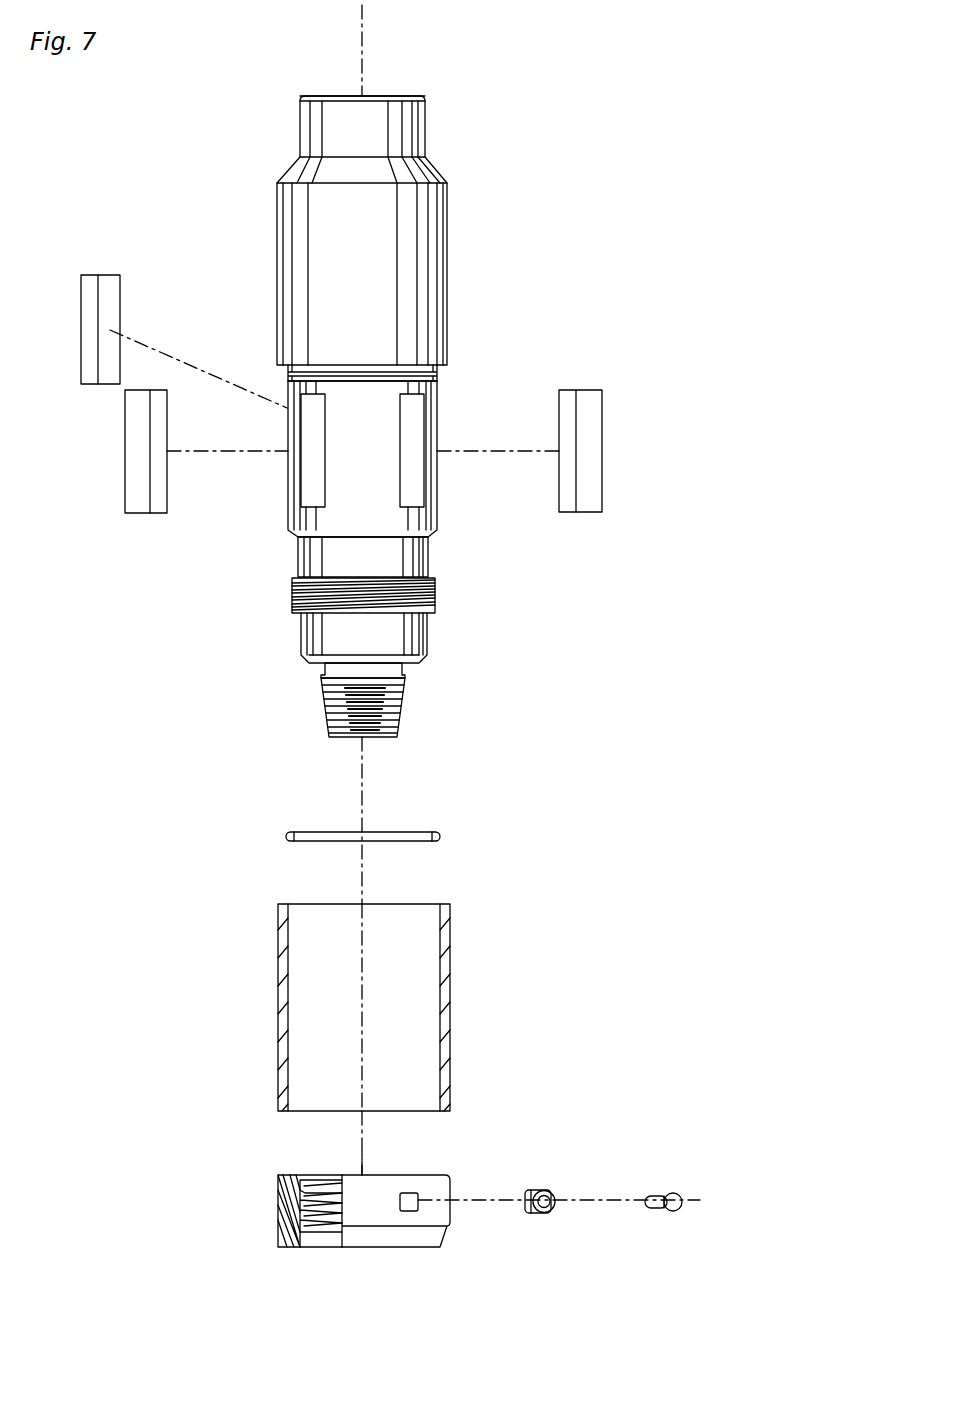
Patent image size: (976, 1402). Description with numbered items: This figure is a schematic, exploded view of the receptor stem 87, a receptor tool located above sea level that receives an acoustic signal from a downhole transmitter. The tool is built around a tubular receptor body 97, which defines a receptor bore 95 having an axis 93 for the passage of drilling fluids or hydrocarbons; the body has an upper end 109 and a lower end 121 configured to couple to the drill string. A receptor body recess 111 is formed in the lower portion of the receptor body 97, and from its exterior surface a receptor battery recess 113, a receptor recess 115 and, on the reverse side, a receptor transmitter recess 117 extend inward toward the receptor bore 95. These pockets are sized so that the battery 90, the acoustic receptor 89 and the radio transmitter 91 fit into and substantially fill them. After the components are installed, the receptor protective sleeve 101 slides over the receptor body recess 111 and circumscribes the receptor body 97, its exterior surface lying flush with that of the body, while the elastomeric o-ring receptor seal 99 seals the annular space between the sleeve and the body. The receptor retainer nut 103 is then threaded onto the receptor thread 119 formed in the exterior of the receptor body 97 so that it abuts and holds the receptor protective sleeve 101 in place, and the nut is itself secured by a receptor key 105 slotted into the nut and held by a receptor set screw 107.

The receptor stem 87 is at (531, 313).
The acoustic receptor 89 is at (135, 423).
The battery 90 is at (594, 427).
The radio transmitter 91 is at (84, 315).
The axis 93 is at (362, 32).
The receptor bore 95 is at (323, 80).
The receptor body 97 is at (450, 237).
The receptor seal 99 is at (440, 836).
The receptor protective sleeve 101 is at (450, 990).
The receptor retainer nut 103 is at (413, 1175).
The receptor key 105 is at (542, 1190).
The receptor set screw 107 is at (682, 1202).
The upper end 109 is at (432, 128).
The receptor body recess 111 is at (437, 487).
The receptor battery recess 113 is at (412, 425).
The receptor recess 115 is at (312, 485).
The receptor transmitter recess 117 is at (275, 372).
The receptor thread 119 is at (295, 592).
The lower end 121 is at (322, 707).